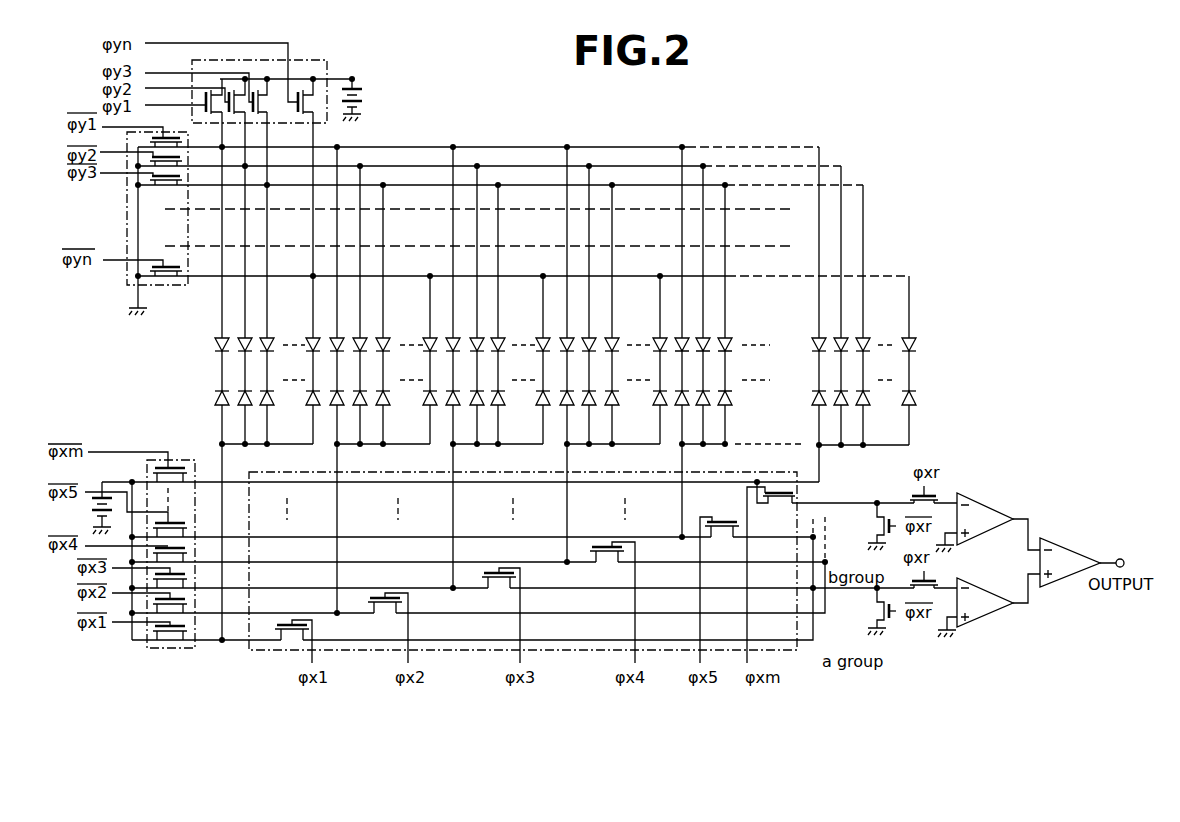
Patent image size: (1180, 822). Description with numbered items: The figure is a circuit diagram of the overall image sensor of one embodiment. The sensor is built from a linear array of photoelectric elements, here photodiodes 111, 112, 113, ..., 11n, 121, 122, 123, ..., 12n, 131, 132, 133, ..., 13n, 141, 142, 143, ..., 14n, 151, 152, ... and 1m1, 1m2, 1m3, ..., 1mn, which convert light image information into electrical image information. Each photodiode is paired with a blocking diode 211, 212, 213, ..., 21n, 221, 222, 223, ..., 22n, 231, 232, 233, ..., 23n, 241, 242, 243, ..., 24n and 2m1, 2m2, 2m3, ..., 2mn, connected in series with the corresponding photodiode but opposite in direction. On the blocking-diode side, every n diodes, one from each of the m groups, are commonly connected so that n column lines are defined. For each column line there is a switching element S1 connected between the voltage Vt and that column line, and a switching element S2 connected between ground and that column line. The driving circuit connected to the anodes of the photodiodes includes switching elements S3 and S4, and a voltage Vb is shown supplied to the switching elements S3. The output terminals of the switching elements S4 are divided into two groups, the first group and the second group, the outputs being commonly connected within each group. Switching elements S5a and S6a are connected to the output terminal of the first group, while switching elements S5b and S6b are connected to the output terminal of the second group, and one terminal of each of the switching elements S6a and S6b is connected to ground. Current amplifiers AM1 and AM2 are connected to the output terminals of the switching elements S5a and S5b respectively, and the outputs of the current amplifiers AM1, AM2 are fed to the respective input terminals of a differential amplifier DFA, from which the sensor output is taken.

The switching element S1 is at (330, 66).
The switching element S2 is at (182, 287).
The switching element S3 is at (140, 564).
The switching element S4 is at (225, 560).
The switching element S5a is at (948, 569).
The switching element S5b is at (912, 498).
The switching element S6a is at (898, 622).
The switching element S6b is at (876, 528).
The current amplifier AM1 is at (989, 614).
The current amplifier AM2 is at (1001, 509).
The differential amplifier DFA is at (1062, 546).
The voltage Vt is at (356, 82).
The bias voltage source Vb is at (103, 481).
The photoelectric element 111 is at (214, 398).
The photoelectric element 112 is at (240, 406).
The photoelectric element 113 is at (267, 407).
The photoelectric element 11n is at (309, 402).
The photoelectric element 121 is at (335, 407).
The photoelectric element 122 is at (360, 407).
The photoelectric element 123 is at (383, 407).
The photoelectric element 12n is at (429, 402).
The photoelectric element 131 is at (451, 407).
The photoelectric element 132 is at (476, 407).
The photoelectric element 133 is at (497, 407).
The photoelectric element 13n is at (541, 402).
The photoelectric element 141 is at (566, 407).
The photoelectric element 142 is at (589, 407).
The photoelectric element 143 is at (612, 407).
The photoelectric element 14n is at (659, 402).
The photoelectric element 151 is at (681, 407).
The photoelectric element 152 is at (703, 407).
The photoelectric element 1m1 is at (814, 404).
The photoelectric element 1m2 is at (840, 407).
The photoelectric element 1m3 is at (865, 407).
The photoelectric element 1mn is at (910, 404).
The blocking diode 211 is at (214, 346).
The blocking diode 212 is at (240, 338).
The blocking diode 213 is at (262, 337).
The blocking diode 21n is at (311, 339).
The blocking diode 221 is at (341, 337).
The blocking diode 222 is at (363, 337).
The blocking diode 223 is at (386, 338).
The blocking diode 22n is at (428, 352).
The blocking diode 231 is at (455, 337).
The blocking diode 232 is at (478, 337).
The blocking diode 233 is at (500, 338).
The blocking diode 23n is at (541, 352).
The blocking diode 241 is at (569, 337).
The blocking diode 242 is at (590, 337).
The blocking diode 243 is at (612, 338).
The blocking diode 24n is at (657, 352).
The blocking diode 2m1 is at (814, 338).
The blocking diode 2m2 is at (843, 337).
The blocking diode 2m3 is at (865, 338).
The blocking diode 2mn is at (911, 339).